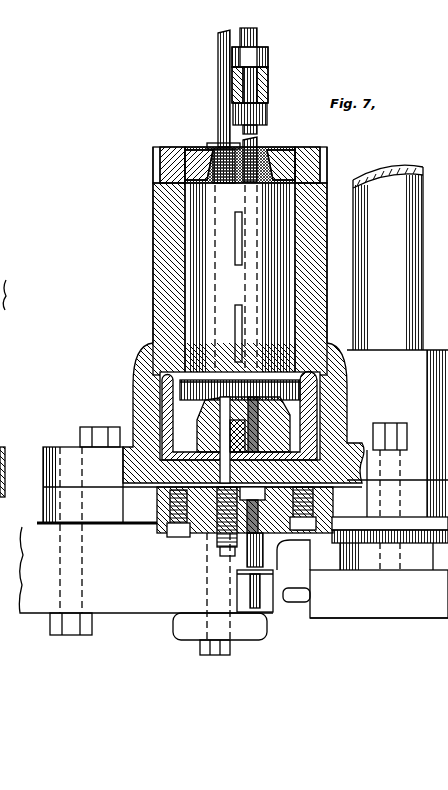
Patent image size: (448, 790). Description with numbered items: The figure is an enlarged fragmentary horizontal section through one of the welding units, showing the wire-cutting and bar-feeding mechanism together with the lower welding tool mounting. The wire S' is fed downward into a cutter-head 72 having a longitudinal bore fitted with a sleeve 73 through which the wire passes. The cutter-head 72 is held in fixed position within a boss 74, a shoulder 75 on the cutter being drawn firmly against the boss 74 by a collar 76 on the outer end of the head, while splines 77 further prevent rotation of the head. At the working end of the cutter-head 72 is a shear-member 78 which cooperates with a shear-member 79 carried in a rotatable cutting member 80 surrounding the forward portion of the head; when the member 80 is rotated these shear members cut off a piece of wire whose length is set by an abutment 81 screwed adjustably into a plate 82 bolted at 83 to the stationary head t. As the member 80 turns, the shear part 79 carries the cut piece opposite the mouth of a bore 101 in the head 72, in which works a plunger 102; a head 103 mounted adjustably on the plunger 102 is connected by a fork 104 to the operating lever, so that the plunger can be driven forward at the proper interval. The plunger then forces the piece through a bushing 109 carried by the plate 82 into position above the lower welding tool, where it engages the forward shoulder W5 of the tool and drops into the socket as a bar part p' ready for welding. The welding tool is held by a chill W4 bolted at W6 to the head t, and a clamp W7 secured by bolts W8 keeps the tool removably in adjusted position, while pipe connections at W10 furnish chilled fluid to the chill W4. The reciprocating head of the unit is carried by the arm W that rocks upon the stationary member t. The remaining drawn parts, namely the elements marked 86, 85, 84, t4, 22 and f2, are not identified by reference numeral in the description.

The wire S' is at (196, 88).
The plunger 102 is at (258, 36).
The head 103 is at (268, 58).
The fork 104 is at (268, 85).
The cutter-head 72 is at (207, 148).
The sleeve 73 is at (218, 146).
The collar 76 is at (153, 170).
The splines 77 is at (235, 225).
The boss 74 is at (153, 282).
The shoulder 75 is at (153, 352).
The rotatable cutting member 80 is at (160, 383).
The shear-member 78 is at (215, 430).
The shear-member 79 is at (225, 440).
The bore 101 is at (300, 423).
The bolt 86 is at (80, 430).
The sleeve wall 85 is at (47, 448).
The plate 82 is at (170, 525).
The bolts 83 is at (178, 535).
The abutment 81 is at (222, 547).
The base plate 84 is at (100, 510).
The bar part p' is at (223, 592).
The bushing 109 is at (263, 560).
The stationary lower member t is at (43, 495).
The plate t4 is at (40, 526).
The cylinder 22 is at (395, 168).
The arm W is at (275, 612).
The chill W4 is at (247, 578).
The forward shoulder W5 is at (255, 608).
The bolt W6 is at (72, 636).
The clamp W7 is at (173, 622).
The bolts W8 is at (215, 650).
The pipe connections W10 is at (312, 548).
The frame f2 is at (430, 612).